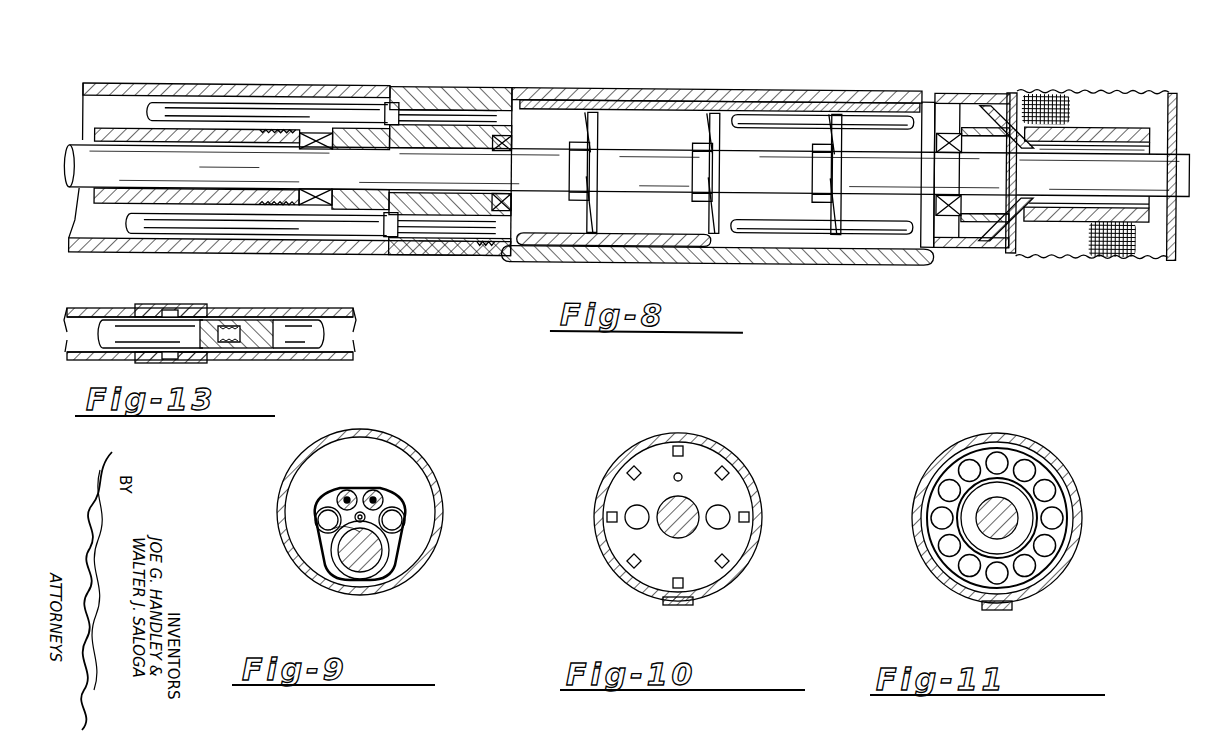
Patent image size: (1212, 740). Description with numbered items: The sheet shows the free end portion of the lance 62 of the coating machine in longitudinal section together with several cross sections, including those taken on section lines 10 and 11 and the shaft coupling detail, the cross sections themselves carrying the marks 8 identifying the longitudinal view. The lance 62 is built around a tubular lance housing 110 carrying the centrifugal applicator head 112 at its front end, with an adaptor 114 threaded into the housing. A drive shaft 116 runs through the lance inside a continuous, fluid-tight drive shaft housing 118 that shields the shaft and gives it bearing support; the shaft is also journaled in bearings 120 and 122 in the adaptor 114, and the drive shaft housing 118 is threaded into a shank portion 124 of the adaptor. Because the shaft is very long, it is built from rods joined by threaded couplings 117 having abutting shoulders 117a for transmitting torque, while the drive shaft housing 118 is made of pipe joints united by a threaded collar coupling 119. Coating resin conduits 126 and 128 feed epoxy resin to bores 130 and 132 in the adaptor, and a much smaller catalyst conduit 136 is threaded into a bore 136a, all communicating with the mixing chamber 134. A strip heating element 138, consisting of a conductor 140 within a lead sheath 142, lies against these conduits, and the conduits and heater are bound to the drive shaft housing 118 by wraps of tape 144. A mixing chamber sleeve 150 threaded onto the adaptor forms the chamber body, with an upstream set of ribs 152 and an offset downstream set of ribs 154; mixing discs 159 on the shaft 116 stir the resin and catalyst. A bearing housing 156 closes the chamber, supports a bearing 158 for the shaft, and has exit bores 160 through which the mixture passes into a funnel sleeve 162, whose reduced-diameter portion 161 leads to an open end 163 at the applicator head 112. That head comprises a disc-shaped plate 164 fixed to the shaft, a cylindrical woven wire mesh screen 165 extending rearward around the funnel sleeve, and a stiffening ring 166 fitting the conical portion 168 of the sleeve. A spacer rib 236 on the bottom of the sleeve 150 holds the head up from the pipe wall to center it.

In FIG. 8, the lance 62 is at (110, 82).
In FIG. 8, the tubular lance housing 110 is at (214, 83).
In FIG. 9, the tubular lance housing 110 is at (398, 441).
In FIG. 8, the centrifugal applicator head 112 is at (1172, 84).
In FIG. 8, the adaptor 114 is at (452, 85).
In FIG. 10, the adaptor 114 is at (730, 490).
In FIG. 8, the drive shaft 116 is at (176, 168).
In FIG. 13, the drive shaft 116 is at (300, 322).
In FIG. 9, the drive shaft 116 is at (365, 560).
In FIG. 10, the drive shaft 116 is at (678, 517).
In FIG. 11, the drive shaft 116 is at (1008, 520).
In FIG. 13, the threaded coupling 117 is at (246, 320).
In FIG. 13, the abutting shoulders 117a is at (240, 350).
In FIG. 8, the drive shaft housing 118 is at (132, 131).
In FIG. 13, the drive shaft housing 118 is at (103, 308).
In FIG. 9, the drive shaft housing 118 is at (330, 590).
In FIG. 13, the threaded collar coupling 119 is at (157, 304).
In FIG. 8, the bearing 120 is at (318, 130).
In FIG. 8, the bearing 122 is at (512, 138).
In FIG. 8, the shank portion 124 is at (362, 126).
In FIG. 8, the coating resin conduit 126 is at (265, 102).
In FIG. 9, the coating resin conduit 126 is at (405, 519).
In FIG. 8, the coating resin conduit 128 is at (225, 228).
In FIG. 9, the coating resin conduit 128 is at (315, 520).
In FIG. 8, the bore 130 is at (417, 103).
In FIG. 10, the bore 130 is at (722, 512).
In FIG. 8, the bore 132 is at (432, 238).
In FIG. 10, the bore 132 is at (630, 512).
In FIG. 8, the mixing chamber 134 is at (660, 96).
In FIG. 9, the catalyst conduit 136 is at (330, 531).
In FIG. 10, the bore 136a is at (682, 474).
In FIG. 9, the electrical strip heating element 138 is at (322, 497).
In FIG. 9, the electrical conductor 140 is at (341, 491).
In FIG. 9, the lead sheath 142 is at (375, 490).
In FIG. 9, the wraps of tape 144 is at (395, 555).
In FIG. 8, the mixing chamber sleeve 150 is at (553, 84).
In FIG. 10, the mixing chamber sleeve 150 is at (745, 555).
In FIG. 11, the mixing chamber sleeve 150 is at (1042, 582).
In FIG. 8, the ribs 152 is at (598, 108).
In FIG. 10, the ribs 152 is at (680, 446).
In FIG. 8, the ribs 154 is at (753, 109).
In FIG. 10, the ribs 154 is at (630, 465).
In FIG. 8, the bearing housing 156 is at (962, 88).
In FIG. 11, the bearing housing 156 is at (985, 442).
In FIG. 8, the bearing 158 is at (940, 136).
In FIG. 11, the bearing 158 is at (1020, 497).
In FIG. 8, the mixing discs 159 is at (693, 210).
In FIG. 8, the exit bores 160 is at (946, 90).
In FIG. 11, the exit bores 160 is at (1003, 466).
In FIG. 8, the portion of reduced diameter 161 is at (1106, 119).
In FIG. 8, the funnel sleeve 162 is at (995, 240).
In FIG. 8, the open end 163 is at (1150, 133).
In FIG. 8, the disc-shaped plate 164 is at (1172, 250).
In FIG. 8, the woven wire mesh screen 165 is at (1112, 250).
In FIG. 8, the stiffening ring 166 is at (1032, 86).
In FIG. 8, the conical portion 168 is at (1013, 85).
In FIG. 8, the spacer rib 236 is at (636, 258).
In FIG. 10, the spacer rib 236 is at (680, 605).
In FIG. 11, the spacer rib 236 is at (1000, 610).
In FIG. 10, the section line 8- 8 is at (566, 515).
In FIG. 11, the section line 8- 8 is at (890, 520).
In FIG. 8, the section line 10— 10 is at (883, 64).
In FIG. 8, the section line 11— 11 is at (917, 63).